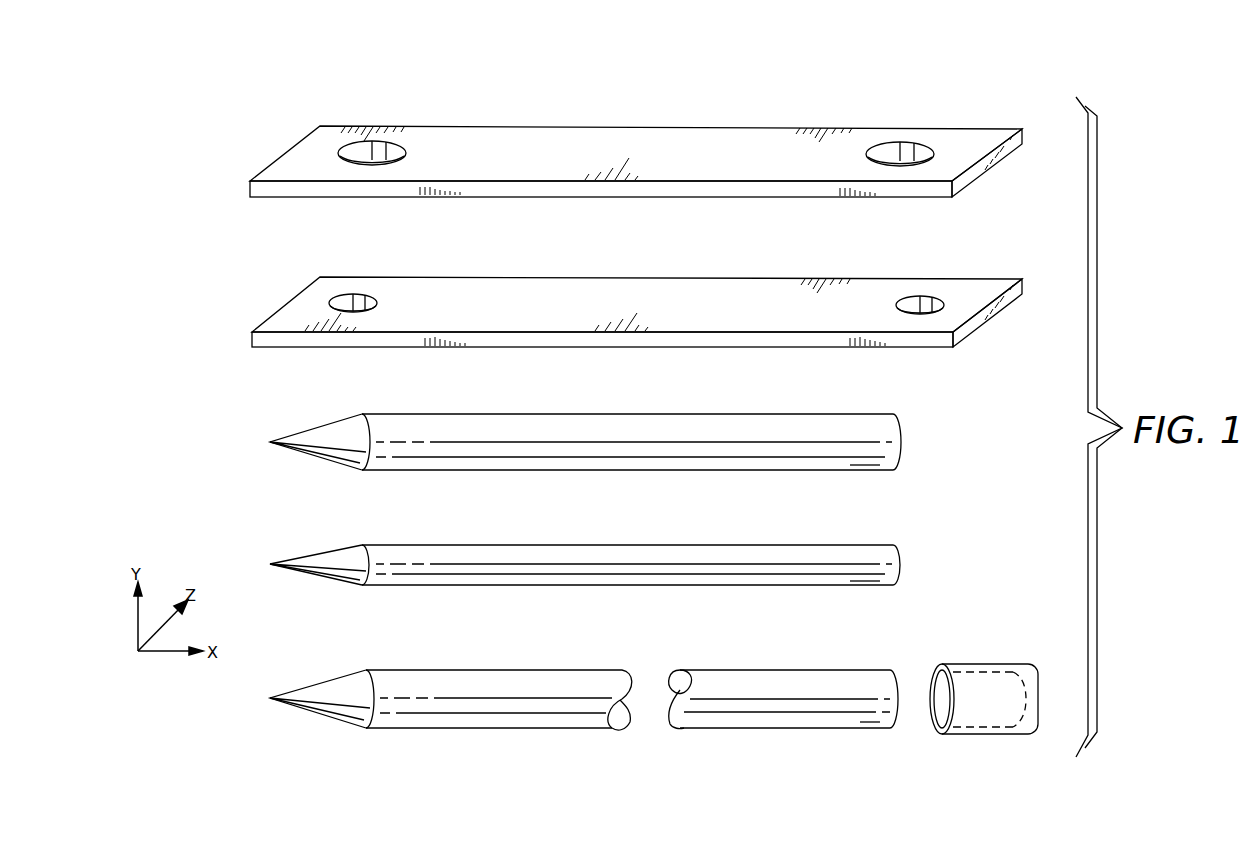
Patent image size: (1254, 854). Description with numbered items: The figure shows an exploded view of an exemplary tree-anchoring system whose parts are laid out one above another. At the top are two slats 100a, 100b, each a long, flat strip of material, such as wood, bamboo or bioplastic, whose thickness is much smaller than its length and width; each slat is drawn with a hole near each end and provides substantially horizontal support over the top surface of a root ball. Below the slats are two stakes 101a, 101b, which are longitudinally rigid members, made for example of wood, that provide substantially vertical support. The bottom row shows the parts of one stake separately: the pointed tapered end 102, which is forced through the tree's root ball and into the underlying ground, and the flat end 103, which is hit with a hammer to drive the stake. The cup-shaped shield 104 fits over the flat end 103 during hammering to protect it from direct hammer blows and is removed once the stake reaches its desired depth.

The slat 100a is at (728, 135).
The slat 100b is at (732, 287).
The stake 101a is at (900, 443).
The stake 101b is at (900, 565).
The tapered end 102 is at (337, 683).
The flat end 103 is at (778, 669).
The shield 104 is at (970, 665).